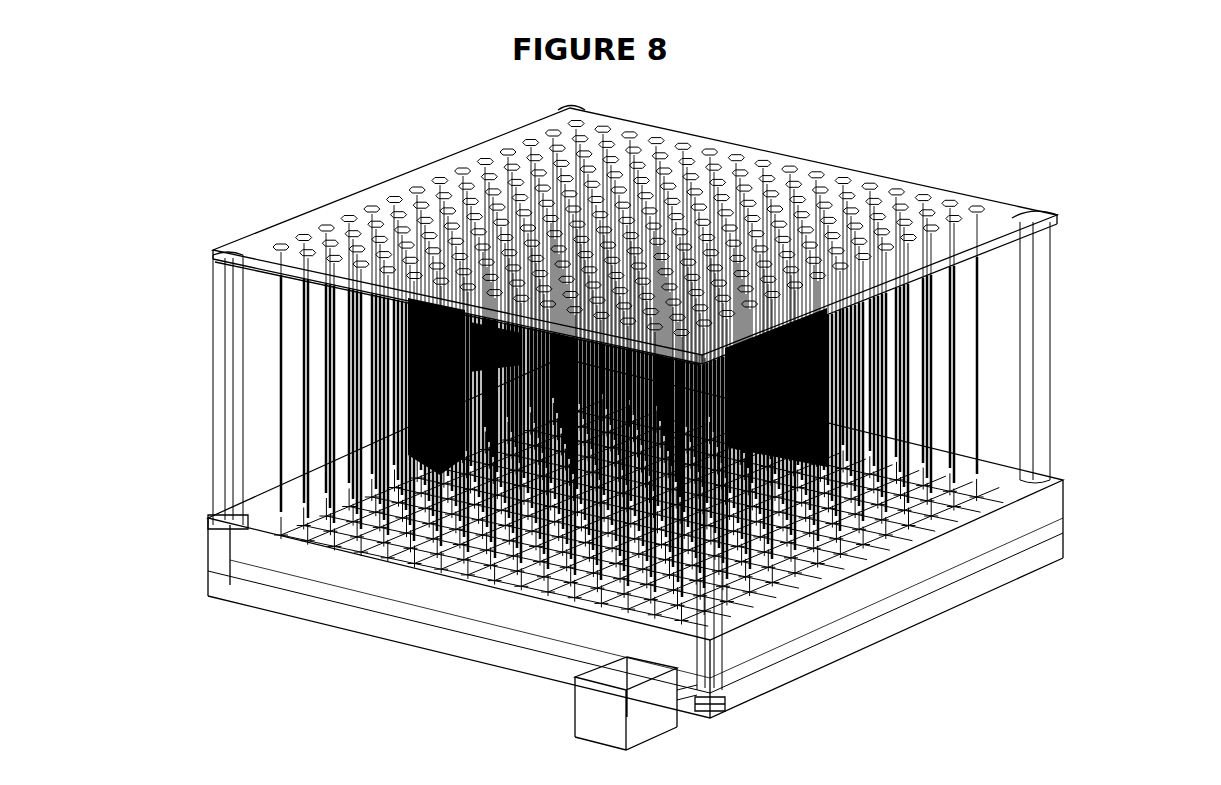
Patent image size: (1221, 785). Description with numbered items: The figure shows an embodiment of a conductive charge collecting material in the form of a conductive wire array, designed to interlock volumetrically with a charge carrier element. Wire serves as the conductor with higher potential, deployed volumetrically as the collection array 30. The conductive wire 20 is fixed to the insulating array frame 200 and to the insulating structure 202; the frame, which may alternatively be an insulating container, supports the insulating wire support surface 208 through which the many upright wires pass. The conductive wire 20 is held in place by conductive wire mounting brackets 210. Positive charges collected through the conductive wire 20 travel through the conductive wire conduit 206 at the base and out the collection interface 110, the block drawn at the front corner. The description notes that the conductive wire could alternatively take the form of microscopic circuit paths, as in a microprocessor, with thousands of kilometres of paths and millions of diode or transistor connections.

The conductive wire 20 is at (283, 300).
The collection array 30 is at (958, 380).
The collection interface 110 is at (645, 710).
The insulating array frame 200 is at (215, 378).
The insulating structure 202 is at (210, 543).
The conductive wire conduit 206 is at (828, 643).
The insulating wire support surface 208 is at (975, 224).
The conductive wire mounting brackets 210 is at (977, 206).